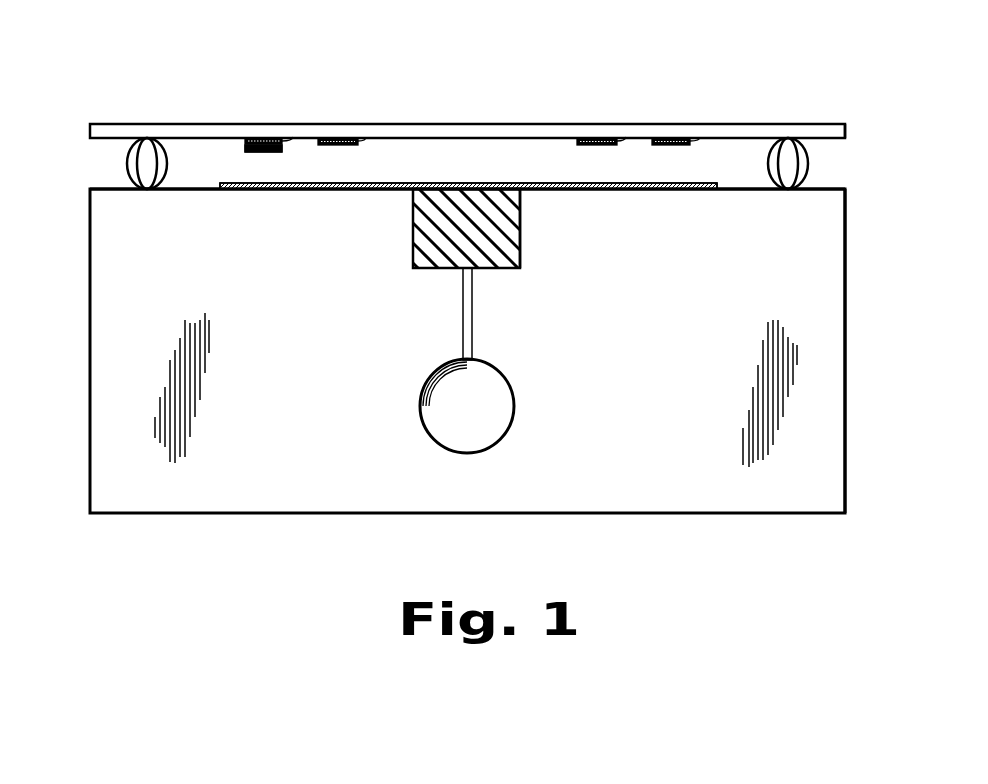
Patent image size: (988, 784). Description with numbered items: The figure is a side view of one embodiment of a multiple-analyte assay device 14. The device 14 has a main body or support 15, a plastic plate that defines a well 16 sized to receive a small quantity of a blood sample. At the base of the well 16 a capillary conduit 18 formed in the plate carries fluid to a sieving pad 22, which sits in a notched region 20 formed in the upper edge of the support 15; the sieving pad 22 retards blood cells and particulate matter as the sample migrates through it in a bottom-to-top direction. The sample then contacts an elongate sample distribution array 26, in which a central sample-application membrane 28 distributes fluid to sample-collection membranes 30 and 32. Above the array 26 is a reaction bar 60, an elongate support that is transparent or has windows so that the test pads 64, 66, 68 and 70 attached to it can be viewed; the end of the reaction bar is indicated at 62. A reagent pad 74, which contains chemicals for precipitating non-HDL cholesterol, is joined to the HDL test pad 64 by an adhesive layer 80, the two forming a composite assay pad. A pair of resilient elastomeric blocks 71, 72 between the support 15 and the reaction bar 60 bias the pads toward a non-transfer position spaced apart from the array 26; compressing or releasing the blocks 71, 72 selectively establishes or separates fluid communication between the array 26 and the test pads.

The multiple-analyte assay device 14 is at (88, 411).
The main body or support 15 is at (847, 350).
The well 16 is at (513, 402).
The capillary conduit 18 is at (472, 307).
The notched region 20 is at (520, 262).
The sieving pad 22 is at (517, 212).
The sample distribution array 26 is at (340, 192).
The sample-application membrane 28 is at (460, 183).
The sample-collection membrane 30 is at (253, 181).
The sample-collection membrane 32 is at (683, 183).
The reaction bar 60 is at (518, 128).
The circuit board end 62 is at (832, 126).
The HDL test pad 64 is at (293, 137).
The test pad 66 is at (368, 137).
The test pad 68 is at (628, 137).
The test pad 70 is at (706, 137).
The elastomeric block 71 is at (148, 165).
The elastomeric block 72 is at (797, 173).
The reagent pad 74 is at (247, 150).
The adhesive layer 80 is at (245, 146).